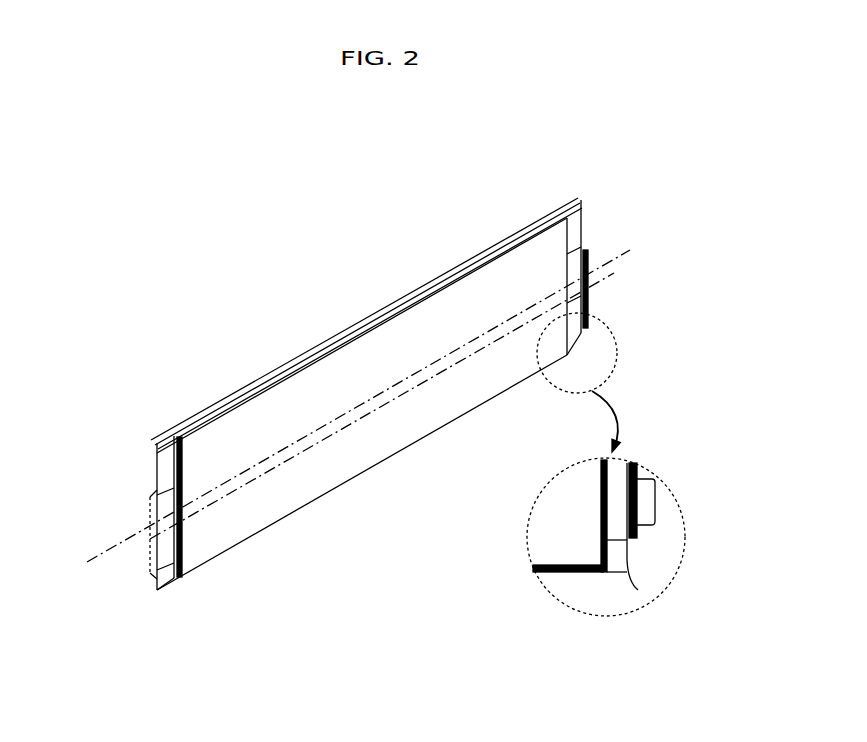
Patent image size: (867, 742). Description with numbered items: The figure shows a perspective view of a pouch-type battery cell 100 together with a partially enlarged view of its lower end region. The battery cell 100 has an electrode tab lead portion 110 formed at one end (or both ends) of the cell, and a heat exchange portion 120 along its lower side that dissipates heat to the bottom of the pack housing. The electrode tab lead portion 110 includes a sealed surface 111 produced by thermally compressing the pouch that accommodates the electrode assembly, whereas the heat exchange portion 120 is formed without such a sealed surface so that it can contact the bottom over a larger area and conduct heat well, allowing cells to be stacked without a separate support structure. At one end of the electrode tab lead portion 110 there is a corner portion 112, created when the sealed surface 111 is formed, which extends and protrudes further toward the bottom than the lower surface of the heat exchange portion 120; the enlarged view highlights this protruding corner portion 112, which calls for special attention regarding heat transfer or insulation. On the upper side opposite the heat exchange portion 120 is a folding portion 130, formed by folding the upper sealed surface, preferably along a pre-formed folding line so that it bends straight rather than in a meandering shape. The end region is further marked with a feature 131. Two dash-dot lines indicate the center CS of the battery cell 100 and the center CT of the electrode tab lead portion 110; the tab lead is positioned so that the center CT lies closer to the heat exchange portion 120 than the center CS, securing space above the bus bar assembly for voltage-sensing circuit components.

The battery cell 100 is at (222, 187).
The electrode tab lead portion 110 is at (150, 495).
The sealed surface 111 is at (155, 468).
The corner portion 112 is at (165, 582).
The heat exchange portion 120 is at (383, 463).
The folding portion 130 is at (338, 331).
The end tab 131 is at (581, 199).
The center of the battery cell CS is at (375, 395).
The center of the electrode tab lead portion CT is at (399, 398).